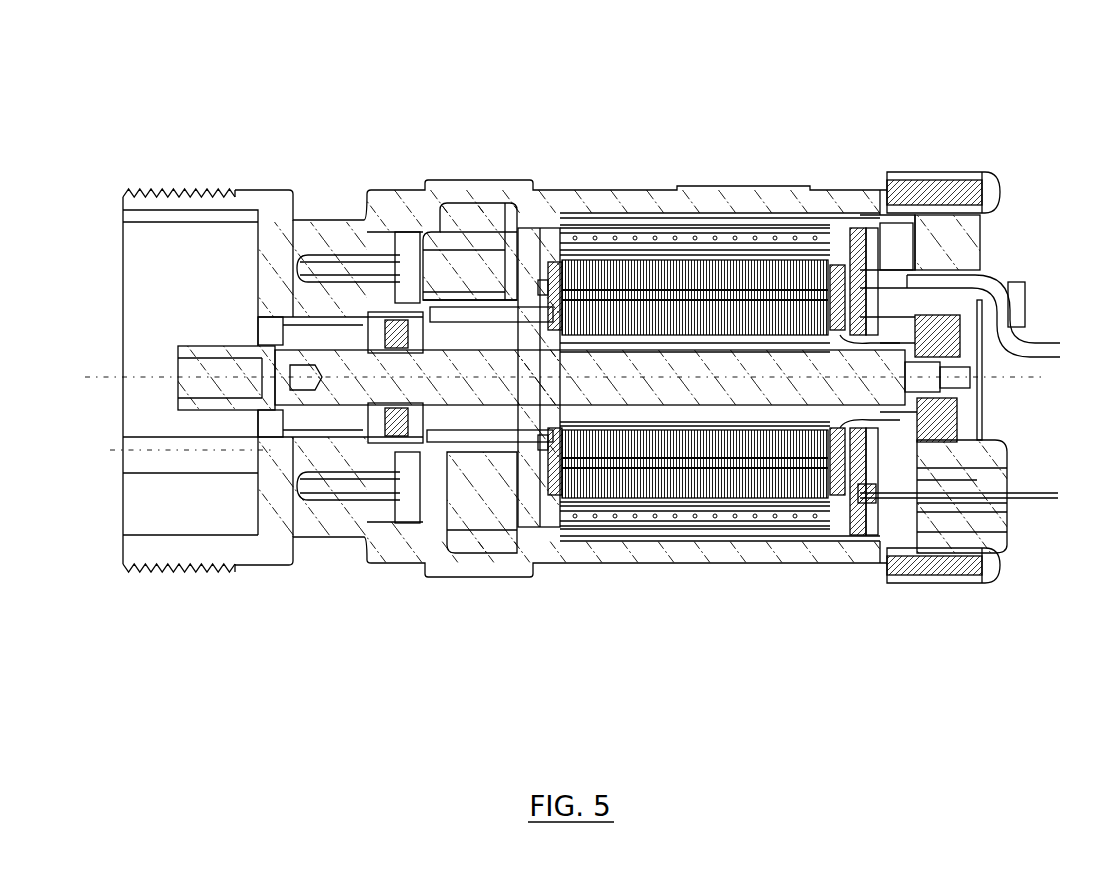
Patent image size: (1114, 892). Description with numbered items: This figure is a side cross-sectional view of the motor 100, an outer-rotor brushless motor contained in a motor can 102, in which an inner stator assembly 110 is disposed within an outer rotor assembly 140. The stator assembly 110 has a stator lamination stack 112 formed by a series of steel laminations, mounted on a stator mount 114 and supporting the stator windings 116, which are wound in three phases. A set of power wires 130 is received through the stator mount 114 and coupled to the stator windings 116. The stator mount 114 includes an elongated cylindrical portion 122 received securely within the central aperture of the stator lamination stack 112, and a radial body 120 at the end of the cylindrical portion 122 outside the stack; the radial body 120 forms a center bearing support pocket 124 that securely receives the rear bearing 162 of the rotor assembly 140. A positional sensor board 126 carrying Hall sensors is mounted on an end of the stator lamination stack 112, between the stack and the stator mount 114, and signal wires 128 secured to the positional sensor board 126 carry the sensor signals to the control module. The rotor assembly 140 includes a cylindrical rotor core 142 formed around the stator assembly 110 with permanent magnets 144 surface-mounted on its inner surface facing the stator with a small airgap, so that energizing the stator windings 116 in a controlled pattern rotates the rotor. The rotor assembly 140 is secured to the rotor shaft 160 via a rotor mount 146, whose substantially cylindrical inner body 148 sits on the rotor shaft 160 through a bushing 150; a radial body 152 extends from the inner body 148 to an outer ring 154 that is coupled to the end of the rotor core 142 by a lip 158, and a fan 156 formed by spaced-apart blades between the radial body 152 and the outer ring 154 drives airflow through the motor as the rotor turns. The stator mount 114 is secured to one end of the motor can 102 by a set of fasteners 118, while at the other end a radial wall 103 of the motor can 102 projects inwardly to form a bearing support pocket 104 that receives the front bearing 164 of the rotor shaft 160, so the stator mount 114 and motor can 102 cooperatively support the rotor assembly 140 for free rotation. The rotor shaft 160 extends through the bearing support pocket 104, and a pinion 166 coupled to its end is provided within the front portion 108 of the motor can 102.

The motor 100 is at (336, 47).
The motor can 102 is at (676, 166).
The radial wall 103 is at (275, 238).
The bearing support pocket 104 is at (352, 297).
The front portion 108 is at (95, 268).
The stator assembly 110 is at (668, 508).
The stator lamination stack 112 is at (622, 495).
The stator mount 114 is at (971, 152).
The stator windings 116 is at (830, 280).
The fasteners 118 is at (932, 565).
The radial body 120 is at (970, 233).
The cylindrical portion 122 is at (790, 422).
The center bearing support pocket 124 is at (953, 455).
The positional sensor board 126 is at (857, 230).
The signal wires 128 is at (1030, 503).
The power wires 130 is at (1048, 342).
The rotor assembly 140 is at (772, 540).
The rotor core 142 is at (753, 523).
The permanent magnets 144 is at (720, 512).
The rotor mount 146 is at (485, 213).
The inner body 148 is at (483, 440).
The bushing 150 is at (517, 420).
The radial body 152 is at (455, 237).
The outer ring 154 is at (522, 237).
The fan 156 is at (452, 280).
The lip 158 is at (585, 238).
The rotor shaft 160 is at (333, 387).
The rear bearing 162 is at (937, 323).
The front bearing 164 is at (387, 317).
The pinion 166 is at (220, 400).